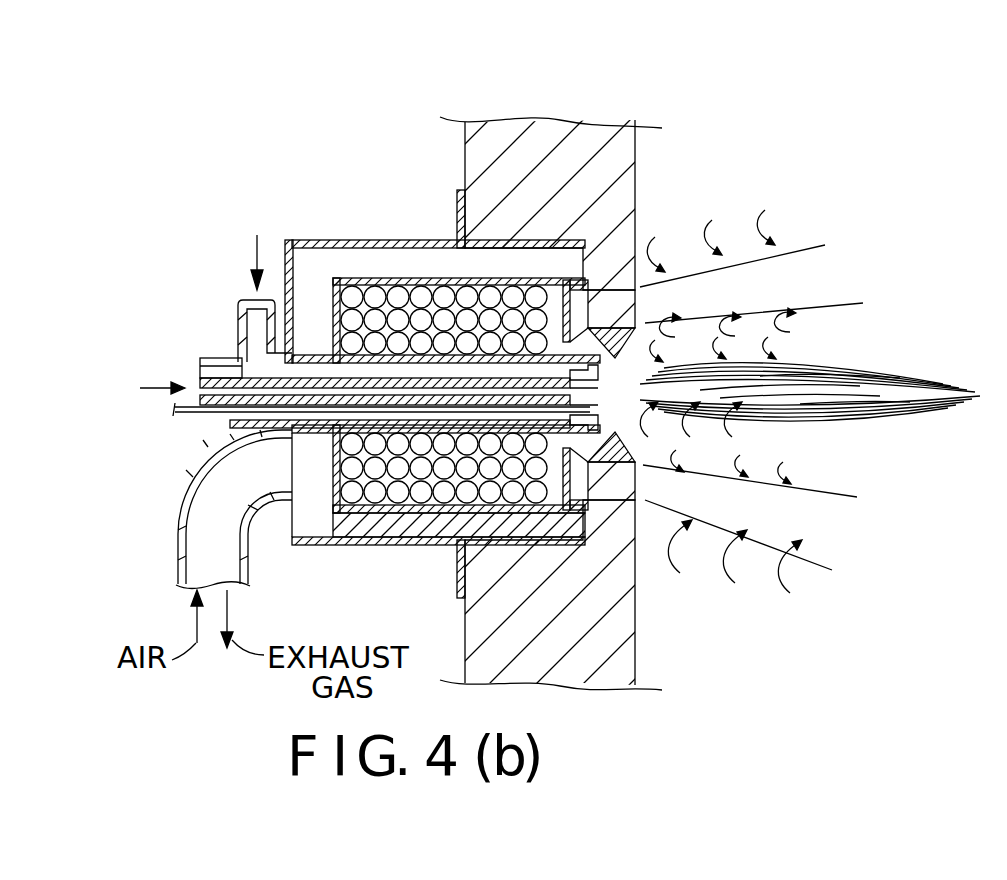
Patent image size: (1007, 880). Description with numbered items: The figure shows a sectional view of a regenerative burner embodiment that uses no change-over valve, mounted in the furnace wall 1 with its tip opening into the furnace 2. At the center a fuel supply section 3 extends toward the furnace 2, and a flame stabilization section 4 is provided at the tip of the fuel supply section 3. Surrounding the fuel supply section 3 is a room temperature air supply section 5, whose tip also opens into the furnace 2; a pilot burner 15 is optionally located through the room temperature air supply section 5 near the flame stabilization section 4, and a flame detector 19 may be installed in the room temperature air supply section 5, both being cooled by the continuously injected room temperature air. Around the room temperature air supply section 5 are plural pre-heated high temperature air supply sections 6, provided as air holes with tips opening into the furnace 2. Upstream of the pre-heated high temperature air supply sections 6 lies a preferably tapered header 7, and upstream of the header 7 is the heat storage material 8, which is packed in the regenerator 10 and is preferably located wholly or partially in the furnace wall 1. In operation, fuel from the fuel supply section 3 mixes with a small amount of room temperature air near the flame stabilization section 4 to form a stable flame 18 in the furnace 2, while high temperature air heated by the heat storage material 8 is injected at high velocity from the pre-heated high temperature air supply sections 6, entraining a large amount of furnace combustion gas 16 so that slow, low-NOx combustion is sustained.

The furnace wall 1 is at (504, 118).
The furnace 2 is at (889, 271).
The fuel supply section 3 is at (200, 380).
The flame stabilization section 4 is at (643, 317).
The room temperature air supply section 5 is at (323, 366).
The pre-heated high temperature air supply sections 6 is at (622, 300).
The header 7 is at (585, 290).
The heat storage material 8 is at (477, 283).
The regenerator 10 is at (360, 330).
The pilot burner 15 is at (185, 412).
The furnace combustion gas 16 is at (778, 232).
The stable flame 18 is at (805, 360).
The flame detector 19 is at (215, 358).